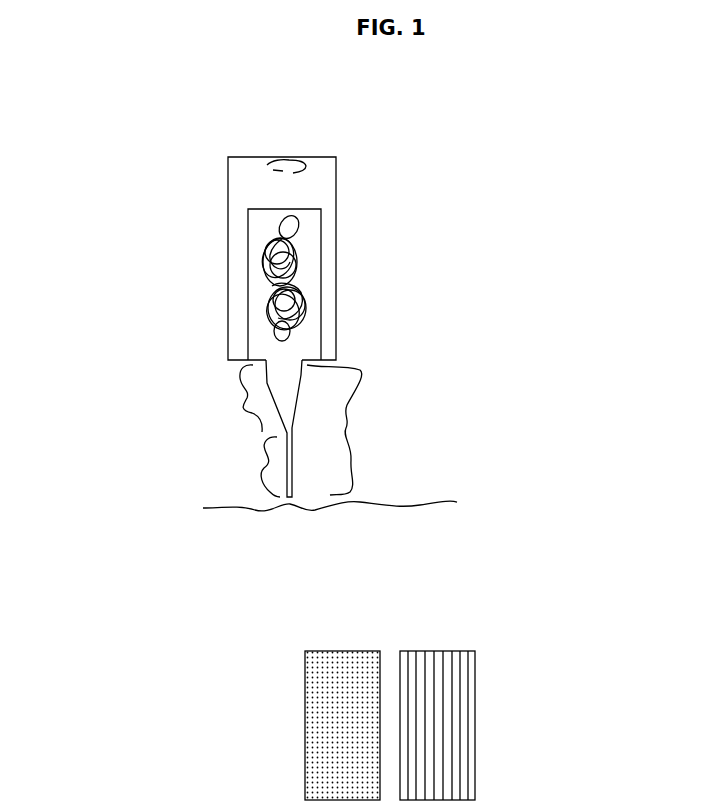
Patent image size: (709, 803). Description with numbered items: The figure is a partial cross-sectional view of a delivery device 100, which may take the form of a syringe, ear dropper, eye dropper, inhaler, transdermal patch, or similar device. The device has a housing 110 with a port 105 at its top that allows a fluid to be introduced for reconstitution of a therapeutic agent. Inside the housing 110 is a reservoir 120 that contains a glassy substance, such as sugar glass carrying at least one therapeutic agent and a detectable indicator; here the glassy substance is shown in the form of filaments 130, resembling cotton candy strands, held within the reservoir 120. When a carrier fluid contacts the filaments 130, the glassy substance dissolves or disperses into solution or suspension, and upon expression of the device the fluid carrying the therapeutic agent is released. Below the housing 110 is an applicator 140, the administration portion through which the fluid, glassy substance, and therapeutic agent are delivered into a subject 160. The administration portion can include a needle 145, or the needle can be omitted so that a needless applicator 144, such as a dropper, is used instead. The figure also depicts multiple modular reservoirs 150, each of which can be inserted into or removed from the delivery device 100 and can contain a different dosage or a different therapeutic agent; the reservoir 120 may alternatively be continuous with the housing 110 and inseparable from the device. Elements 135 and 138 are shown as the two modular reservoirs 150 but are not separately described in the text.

The delivery device 100 is at (223, 128).
The port 105 is at (290, 148).
The housing 110 is at (347, 184).
The reservoir 120 is at (334, 262).
The filaments 130 is at (315, 306).
The fibrous layer 135 is at (475, 724).
The particulate layer 138 is at (317, 730).
The applicator 140 is at (354, 430).
The needless applicator 144 is at (229, 398).
The needle 145 is at (239, 467).
The modular reservoirs 150 is at (352, 624).
The subject 160 is at (475, 500).